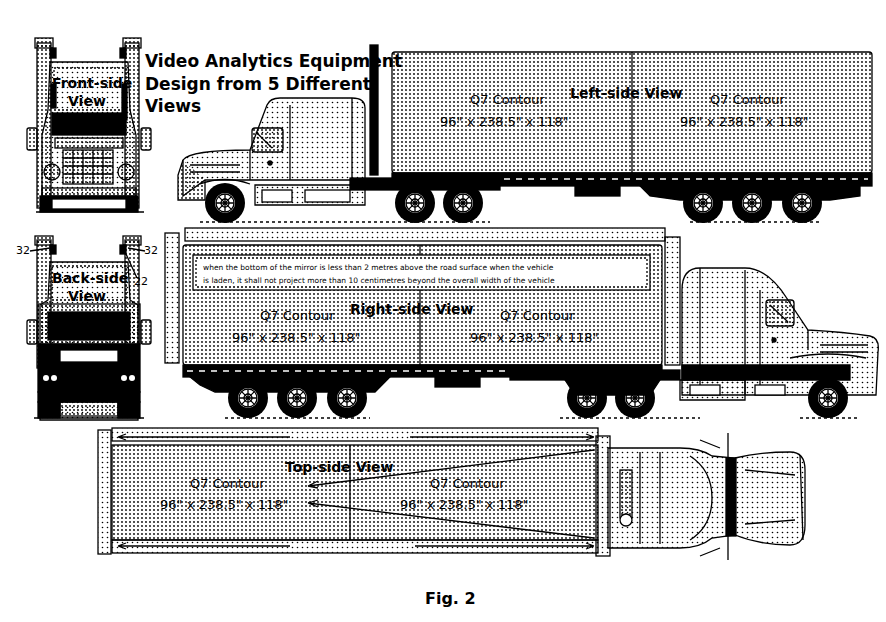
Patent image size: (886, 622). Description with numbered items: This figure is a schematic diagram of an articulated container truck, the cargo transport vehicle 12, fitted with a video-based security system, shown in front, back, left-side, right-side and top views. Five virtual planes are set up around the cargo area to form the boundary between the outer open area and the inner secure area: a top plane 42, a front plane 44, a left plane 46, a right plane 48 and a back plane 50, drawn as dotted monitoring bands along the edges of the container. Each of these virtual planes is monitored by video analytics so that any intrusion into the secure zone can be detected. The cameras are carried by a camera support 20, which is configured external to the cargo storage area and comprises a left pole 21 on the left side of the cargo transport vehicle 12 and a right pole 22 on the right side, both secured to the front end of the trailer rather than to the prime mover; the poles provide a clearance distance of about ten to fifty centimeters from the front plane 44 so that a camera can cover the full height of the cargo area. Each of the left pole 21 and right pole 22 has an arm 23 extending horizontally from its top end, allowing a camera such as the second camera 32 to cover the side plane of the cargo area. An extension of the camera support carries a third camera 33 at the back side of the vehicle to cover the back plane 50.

The cargo transport vehicle 12 is at (858, 415).
The camera support 20 is at (126, 46).
The left pole 21 is at (128, 114).
The right pole 22 is at (51, 96).
The arm 23 is at (40, 40).
The second camera 32 is at (50, 52).
The third camera 33 is at (180, 375).
The top plane 42 is at (196, 234).
The front plane 44 is at (700, 250).
The left plane 46 is at (578, 436).
The right plane 48 is at (568, 552).
The back plane 50 is at (98, 488).